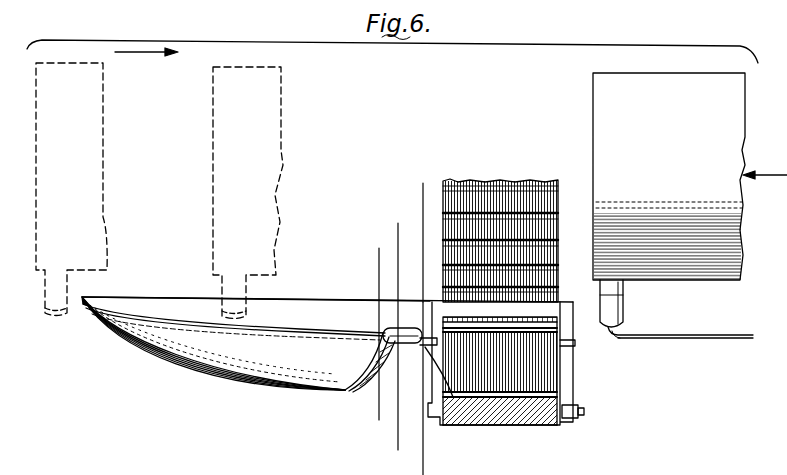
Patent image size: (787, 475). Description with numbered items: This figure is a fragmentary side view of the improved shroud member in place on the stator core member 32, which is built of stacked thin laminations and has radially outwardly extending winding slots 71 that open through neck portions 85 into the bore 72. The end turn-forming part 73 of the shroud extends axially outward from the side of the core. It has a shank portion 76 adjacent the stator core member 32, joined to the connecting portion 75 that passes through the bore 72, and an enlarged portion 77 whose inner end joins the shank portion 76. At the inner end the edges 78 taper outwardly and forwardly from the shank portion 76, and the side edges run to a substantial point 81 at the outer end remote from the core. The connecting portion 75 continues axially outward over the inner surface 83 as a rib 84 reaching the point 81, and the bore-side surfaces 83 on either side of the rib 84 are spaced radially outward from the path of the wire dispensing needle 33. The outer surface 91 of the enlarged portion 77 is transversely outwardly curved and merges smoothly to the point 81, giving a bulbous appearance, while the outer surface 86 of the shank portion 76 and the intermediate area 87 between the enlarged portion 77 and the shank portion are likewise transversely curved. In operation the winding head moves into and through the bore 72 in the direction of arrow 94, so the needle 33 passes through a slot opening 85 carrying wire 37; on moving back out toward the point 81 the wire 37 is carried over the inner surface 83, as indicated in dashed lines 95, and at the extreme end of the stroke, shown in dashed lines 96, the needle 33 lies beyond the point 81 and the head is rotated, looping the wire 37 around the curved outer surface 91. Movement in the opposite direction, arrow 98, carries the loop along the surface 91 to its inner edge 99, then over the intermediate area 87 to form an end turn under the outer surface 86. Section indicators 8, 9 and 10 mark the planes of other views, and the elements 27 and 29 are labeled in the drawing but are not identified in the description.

The dashed lines 96 is at (70, 63).
The arrow 98 is at (146, 59).
The dashed lines 95 is at (258, 67).
The heating panel 29 is at (665, 73).
The panel assembly 27 is at (750, 120).
The arrow 94 is at (765, 167).
The bore 72 is at (493, 203).
The connecting portion 75 is at (508, 313).
The neck portion 85 is at (483, 322).
The winding slot 71 is at (523, 393).
The stator core member 32 is at (537, 425).
The outer surface of shank portion 86 is at (450, 400).
The shank portion 76 is at (430, 313).
The tapered edges 78 is at (398, 333).
The wire dispensing needle 33 is at (623, 308).
The wire 37 is at (710, 333).
The rib 84 is at (153, 297).
The inner surface 83 is at (186, 323).
The point 81 is at (83, 304).
The end turn-forming part 73 is at (203, 370).
The outer surface of enlarged portion 91 is at (250, 380).
The enlarged portion 77 is at (330, 363).
The inner edge 99 is at (343, 382).
The intermediate area 87 is at (372, 367).
The section line 8 is at (412, 207).
The section line 9 is at (390, 238).
The section line 10 is at (372, 270).